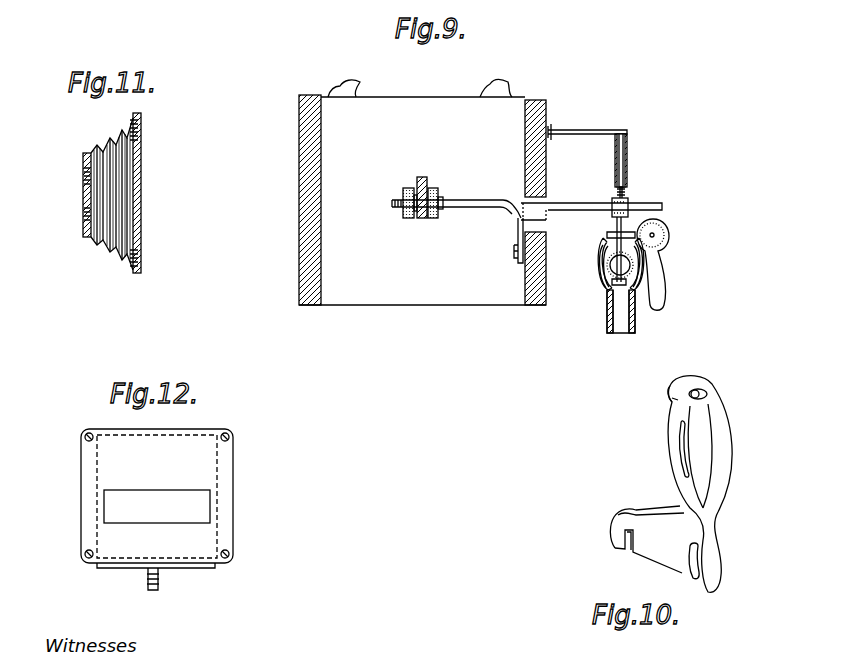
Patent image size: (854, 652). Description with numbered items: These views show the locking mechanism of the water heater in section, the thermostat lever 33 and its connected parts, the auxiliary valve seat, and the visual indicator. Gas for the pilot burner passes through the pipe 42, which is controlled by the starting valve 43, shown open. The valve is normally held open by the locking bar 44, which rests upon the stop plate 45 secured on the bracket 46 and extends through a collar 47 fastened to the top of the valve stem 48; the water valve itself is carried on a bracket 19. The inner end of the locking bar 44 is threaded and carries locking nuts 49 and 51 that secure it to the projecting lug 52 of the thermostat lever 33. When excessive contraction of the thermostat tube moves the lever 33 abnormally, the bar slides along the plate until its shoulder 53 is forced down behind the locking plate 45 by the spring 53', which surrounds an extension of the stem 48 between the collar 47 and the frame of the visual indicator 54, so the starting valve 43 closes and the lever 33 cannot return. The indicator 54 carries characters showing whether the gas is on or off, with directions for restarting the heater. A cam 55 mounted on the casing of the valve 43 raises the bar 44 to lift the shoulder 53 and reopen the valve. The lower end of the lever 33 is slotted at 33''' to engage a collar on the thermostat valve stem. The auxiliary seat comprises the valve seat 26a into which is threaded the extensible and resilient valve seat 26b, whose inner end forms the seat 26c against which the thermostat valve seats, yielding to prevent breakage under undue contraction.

In FIG. 9, the bracket 19 is at (444, 97).
In FIG. 9, the shoulder 53 is at (456, 196).
In FIG. 9, the locking nut 51 is at (406, 218).
In FIG. 9, the projecting lug 52 is at (426, 180).
In FIG. 10, the projecting lug 52 is at (641, 511).
In FIG. 9, the locking nut 49 is at (435, 218).
In FIG. 9, the stop plate 45 is at (517, 235).
In FIG. 9, the bracket 46 is at (521, 262).
In FIG. 9, the locking bar 44 is at (568, 203).
In FIG. 9, the visual indicator 54 is at (628, 130).
In FIG. 12, the visual indicator 54 is at (233, 507).
In FIG. 9, the spring 53' is at (647, 169).
In FIG. 12, the spring 53' is at (178, 583).
In FIG. 9, the collar 47 is at (629, 205).
In FIG. 9, the valve stem 48 is at (623, 247).
In FIG. 12, the valve stem 48 is at (150, 590).
In FIG. 9, the starting valve 43 is at (636, 306).
In FIG. 9, the pipe 42 is at (633, 329).
In FIG. 9, the cam 55 is at (671, 237).
In FIG. 11, the valve seat 26a is at (141, 128).
In FIG. 11, the extensible and resilient valve seat 26b is at (118, 178).
In FIG. 11, the seat 26c is at (88, 153).
In FIG. 10, the thermostat lever 33 is at (716, 484).
In FIG. 10, the slot 33''' is at (727, 555).